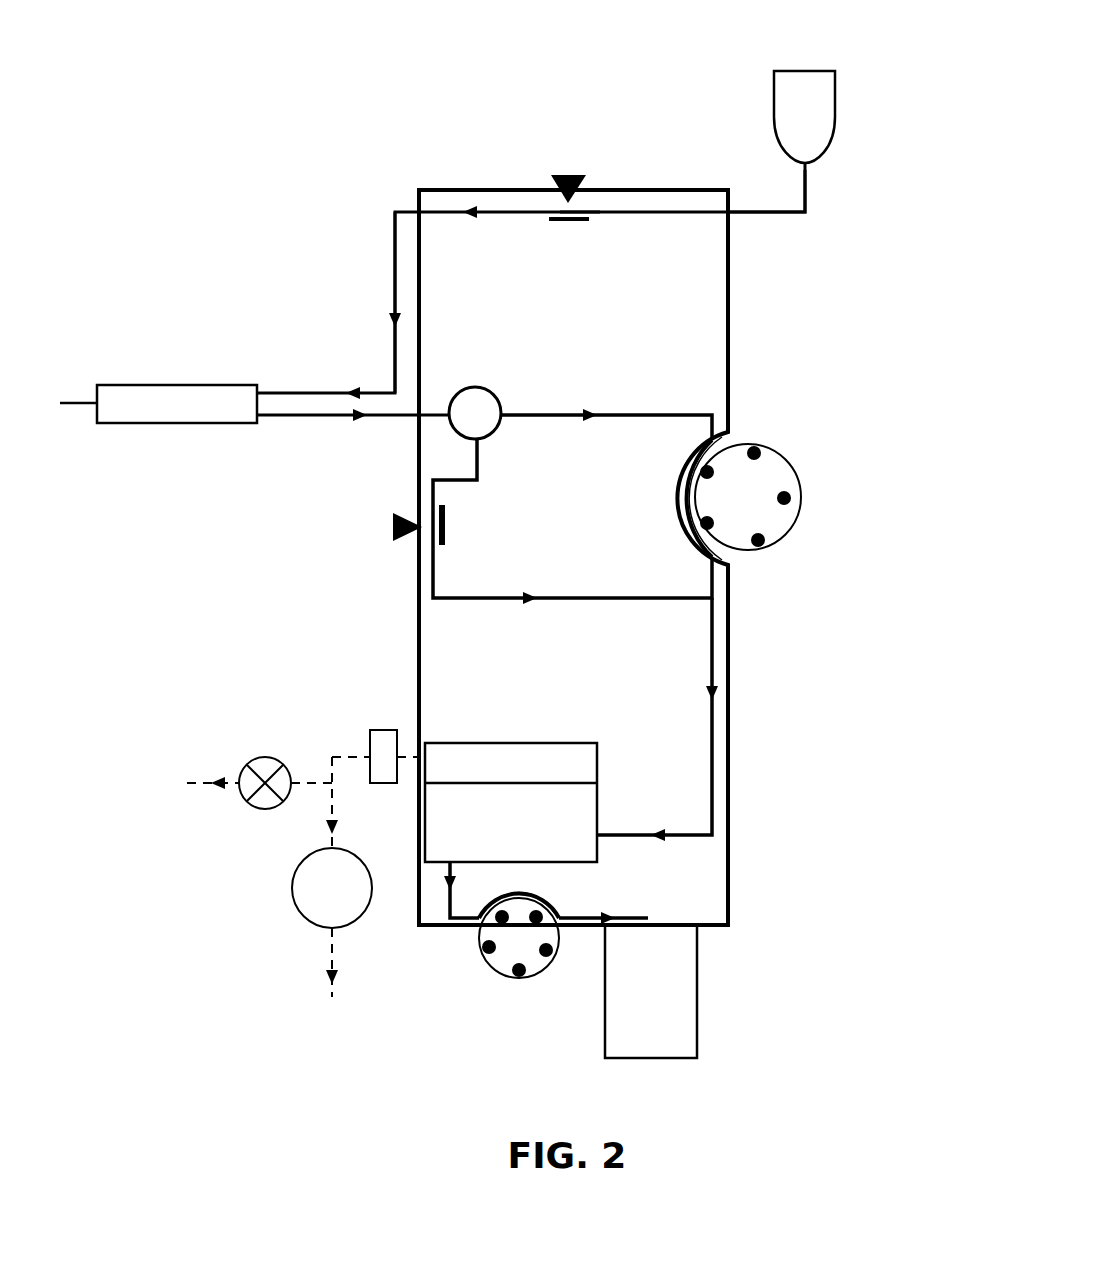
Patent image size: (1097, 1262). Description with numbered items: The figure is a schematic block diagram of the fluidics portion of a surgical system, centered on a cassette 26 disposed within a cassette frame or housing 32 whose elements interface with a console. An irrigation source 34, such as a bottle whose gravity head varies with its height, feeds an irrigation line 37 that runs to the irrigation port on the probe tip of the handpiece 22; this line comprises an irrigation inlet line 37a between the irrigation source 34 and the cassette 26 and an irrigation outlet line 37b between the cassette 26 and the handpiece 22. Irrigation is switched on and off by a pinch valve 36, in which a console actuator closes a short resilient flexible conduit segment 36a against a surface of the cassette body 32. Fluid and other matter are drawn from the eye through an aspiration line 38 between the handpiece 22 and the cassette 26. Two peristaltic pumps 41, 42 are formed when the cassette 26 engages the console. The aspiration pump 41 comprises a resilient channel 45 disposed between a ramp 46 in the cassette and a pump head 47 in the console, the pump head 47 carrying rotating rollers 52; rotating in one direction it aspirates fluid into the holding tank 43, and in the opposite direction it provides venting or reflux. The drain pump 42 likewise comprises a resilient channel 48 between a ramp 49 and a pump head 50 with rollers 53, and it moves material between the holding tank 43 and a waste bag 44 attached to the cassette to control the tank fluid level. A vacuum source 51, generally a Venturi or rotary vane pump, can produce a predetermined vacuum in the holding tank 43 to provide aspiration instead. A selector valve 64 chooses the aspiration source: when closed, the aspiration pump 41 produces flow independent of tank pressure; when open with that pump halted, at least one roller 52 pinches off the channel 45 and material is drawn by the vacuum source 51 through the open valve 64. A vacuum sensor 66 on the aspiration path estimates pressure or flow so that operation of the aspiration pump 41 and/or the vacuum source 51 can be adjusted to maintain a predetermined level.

The handpiece 22 is at (222, 390).
The cassette 26 is at (728, 800).
The cassette frame or housing 32 is at (728, 355).
The irrigation source 34 is at (835, 106).
The irrigation on/off pinch valve 36 is at (535, 168).
The resilient flexible conduit segment 36a is at (617, 212).
The irrigation line 37 is at (393, 240).
The irrigation inlet line 37a is at (806, 192).
The irrigation outlet line 37b is at (393, 293).
The aspiration line 38 is at (317, 415).
The peristaltic pump (aspiration pump) 41 is at (790, 562).
The peristaltic pump (drain pump) 42 is at (487, 1000).
The holding tank 43 is at (598, 760).
The waste bag 44 is at (697, 1023).
The resilient channel 45 is at (676, 485).
The ramp 46 is at (683, 523).
The pump head 47 is at (797, 468).
The resilient channel 48 is at (523, 900).
The ramp 49 is at (502, 897).
The pump head 50 is at (530, 978).
The vacuum source 51 is at (283, 703).
The rollers 52 is at (756, 450).
The rollers 53 is at (482, 950).
The selector valve 64 is at (385, 533).
The vacuum sensor 66 is at (500, 395).